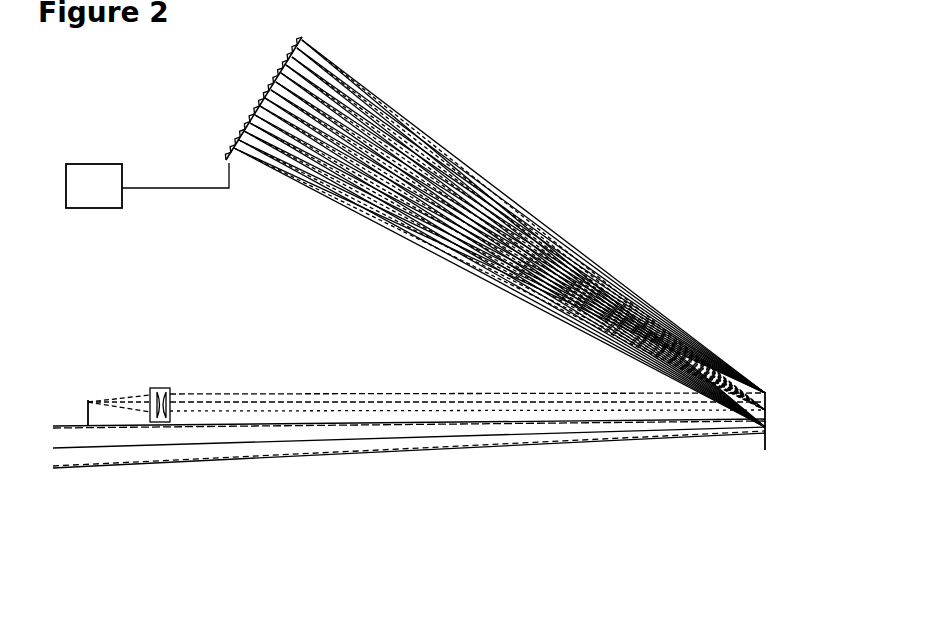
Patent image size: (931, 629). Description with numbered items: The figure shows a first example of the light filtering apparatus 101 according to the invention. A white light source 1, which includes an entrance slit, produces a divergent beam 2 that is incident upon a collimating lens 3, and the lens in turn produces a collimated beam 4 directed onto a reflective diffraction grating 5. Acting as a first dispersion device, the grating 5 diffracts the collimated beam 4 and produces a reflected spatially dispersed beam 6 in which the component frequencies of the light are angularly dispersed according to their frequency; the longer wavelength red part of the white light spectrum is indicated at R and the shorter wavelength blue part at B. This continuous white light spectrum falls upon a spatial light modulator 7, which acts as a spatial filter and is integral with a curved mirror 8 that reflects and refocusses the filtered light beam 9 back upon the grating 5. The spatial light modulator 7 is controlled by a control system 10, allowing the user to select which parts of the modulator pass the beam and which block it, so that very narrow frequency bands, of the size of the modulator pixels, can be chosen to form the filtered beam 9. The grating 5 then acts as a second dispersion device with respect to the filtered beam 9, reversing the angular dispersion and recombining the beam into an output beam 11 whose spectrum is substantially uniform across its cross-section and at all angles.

The spectrometer 101 is at (428, 269).
The white light source 1 is at (86, 383).
The divergent beam 2 is at (133, 402).
The collimating lens 3 is at (172, 390).
The collimated beam 4 is at (238, 400).
The reflective diffraction grating 5 is at (766, 448).
The spatially dispersed beam 6 is at (590, 262).
The spatial light modulator 7 is at (237, 140).
The curved mirror 8 is at (275, 83).
The filtered light beam 9 is at (468, 183).
The control system 10 is at (147, 185).
The output beam 11 is at (210, 455).
The red part of spectrum R is at (325, 62).
The blue part of spectrum B is at (267, 162).